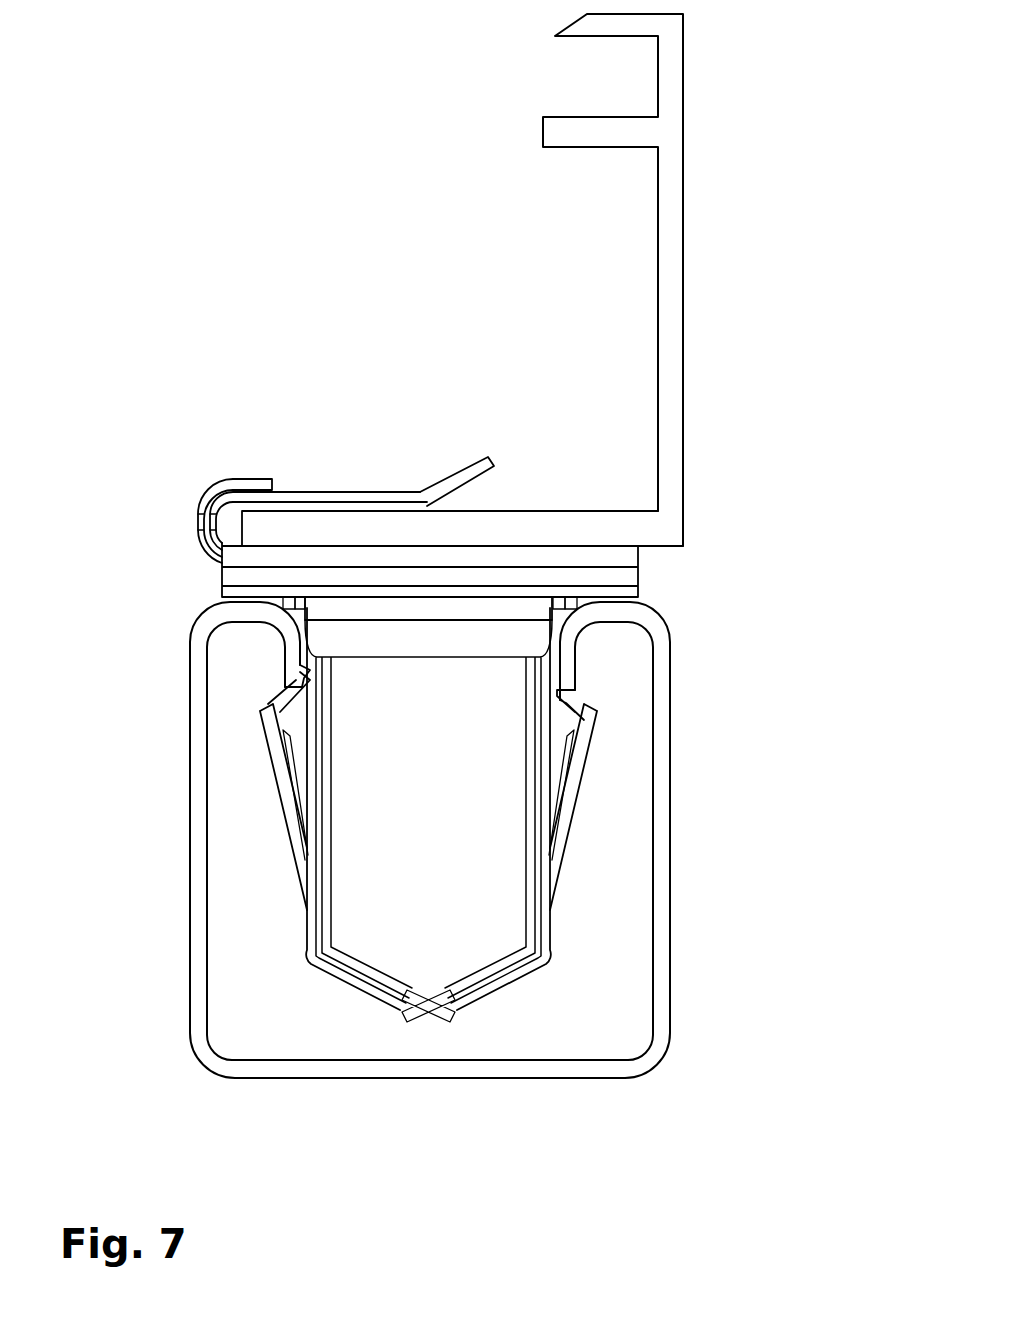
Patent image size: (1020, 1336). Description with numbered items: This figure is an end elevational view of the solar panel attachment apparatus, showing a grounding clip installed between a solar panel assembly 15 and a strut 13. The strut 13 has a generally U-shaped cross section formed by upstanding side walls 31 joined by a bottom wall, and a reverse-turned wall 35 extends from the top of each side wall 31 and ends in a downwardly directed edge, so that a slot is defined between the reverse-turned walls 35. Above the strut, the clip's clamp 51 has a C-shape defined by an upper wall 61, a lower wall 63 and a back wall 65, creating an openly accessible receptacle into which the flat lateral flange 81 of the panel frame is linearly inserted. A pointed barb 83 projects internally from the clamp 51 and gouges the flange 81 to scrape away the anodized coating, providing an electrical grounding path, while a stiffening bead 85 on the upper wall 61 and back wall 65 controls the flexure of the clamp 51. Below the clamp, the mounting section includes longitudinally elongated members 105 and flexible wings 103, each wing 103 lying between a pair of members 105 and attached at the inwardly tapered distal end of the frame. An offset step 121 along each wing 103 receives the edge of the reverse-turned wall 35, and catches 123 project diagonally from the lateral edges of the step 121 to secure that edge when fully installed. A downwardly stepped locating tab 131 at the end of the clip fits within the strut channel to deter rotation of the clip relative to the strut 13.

The strut 13 is at (672, 931).
The solar panel assembly 15 is at (673, 212).
The side wall 31 is at (190, 848).
The reverse-turned wall 35 is at (300, 678).
The clamp 51 is at (300, 492).
The upper wall 61 is at (373, 493).
The lower wall 63 is at (237, 513).
The back wall 65 is at (200, 537).
The flat lateral flange 81 is at (548, 527).
The pointed barb 83 is at (427, 503).
The stiffening bead 85 is at (210, 496).
The flexible wing 103 is at (290, 830).
The member 105 is at (330, 830).
The offset step 121 is at (573, 690).
The catch 123 is at (597, 707).
The locating tab 131 is at (458, 642).